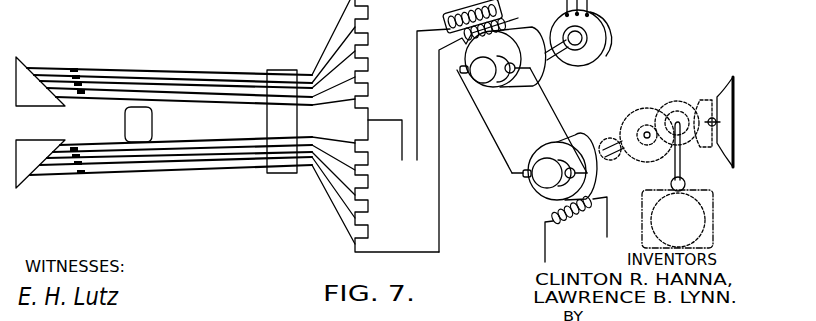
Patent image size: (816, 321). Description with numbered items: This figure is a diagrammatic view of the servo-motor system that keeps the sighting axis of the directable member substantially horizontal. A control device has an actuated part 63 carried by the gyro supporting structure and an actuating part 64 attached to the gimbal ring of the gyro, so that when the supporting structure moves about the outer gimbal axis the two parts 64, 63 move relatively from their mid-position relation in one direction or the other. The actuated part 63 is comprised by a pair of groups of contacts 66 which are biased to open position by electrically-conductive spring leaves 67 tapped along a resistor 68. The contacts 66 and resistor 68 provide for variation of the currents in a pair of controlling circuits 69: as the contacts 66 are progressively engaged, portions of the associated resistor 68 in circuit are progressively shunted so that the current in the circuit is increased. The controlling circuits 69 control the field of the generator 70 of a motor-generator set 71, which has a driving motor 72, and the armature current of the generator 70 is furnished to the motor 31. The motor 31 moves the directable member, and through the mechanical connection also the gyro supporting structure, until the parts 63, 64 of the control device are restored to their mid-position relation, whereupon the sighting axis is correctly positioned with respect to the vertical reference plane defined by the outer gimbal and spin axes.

The motor 31 is at (582, 140).
The actuated part 63 is at (135, 72).
The actuating part 64 is at (152, 124).
The contacts 66 is at (66, 101).
The spring leaves 67 is at (214, 104).
The resistor 68 is at (368, 59).
The controlling circuits 69 is at (418, 30).
The generator 70 is at (485, 50).
The motor-generator set 71 is at (547, 25).
The driving motor 72 is at (598, 33).